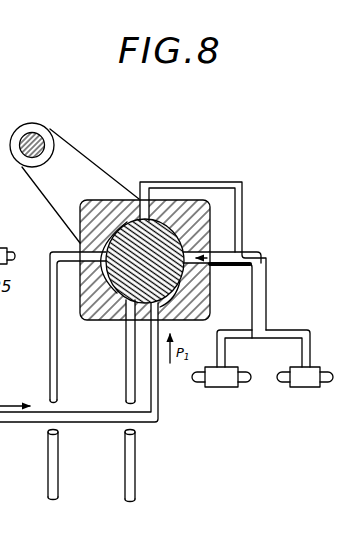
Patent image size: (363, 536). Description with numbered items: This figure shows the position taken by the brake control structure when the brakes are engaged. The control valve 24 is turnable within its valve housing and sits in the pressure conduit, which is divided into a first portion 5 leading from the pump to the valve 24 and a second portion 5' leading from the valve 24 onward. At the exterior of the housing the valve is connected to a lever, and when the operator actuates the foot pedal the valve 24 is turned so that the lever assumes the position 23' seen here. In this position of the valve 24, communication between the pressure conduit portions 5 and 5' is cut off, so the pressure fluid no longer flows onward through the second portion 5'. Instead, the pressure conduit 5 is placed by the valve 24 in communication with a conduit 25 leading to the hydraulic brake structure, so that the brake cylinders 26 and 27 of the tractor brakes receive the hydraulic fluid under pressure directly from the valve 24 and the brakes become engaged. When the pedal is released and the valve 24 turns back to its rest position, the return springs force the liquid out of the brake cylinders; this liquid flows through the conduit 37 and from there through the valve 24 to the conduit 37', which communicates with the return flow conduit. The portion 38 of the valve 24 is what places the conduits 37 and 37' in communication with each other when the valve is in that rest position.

The position of lever 23' is at (74, 183).
The control valve 24 is at (100, 324).
The portion of the valve 38 is at (105, 242).
The conduit 37 is at (203, 242).
The conduit 37' is at (58, 327).
The conduit 25 is at (258, 282).
The brake cylinder 26 is at (222, 385).
The brake cylinder 27 is at (308, 385).
The first portion of pressure conduit 5 is at (79, 375).
The second portion of pressure conduit 5' is at (145, 466).